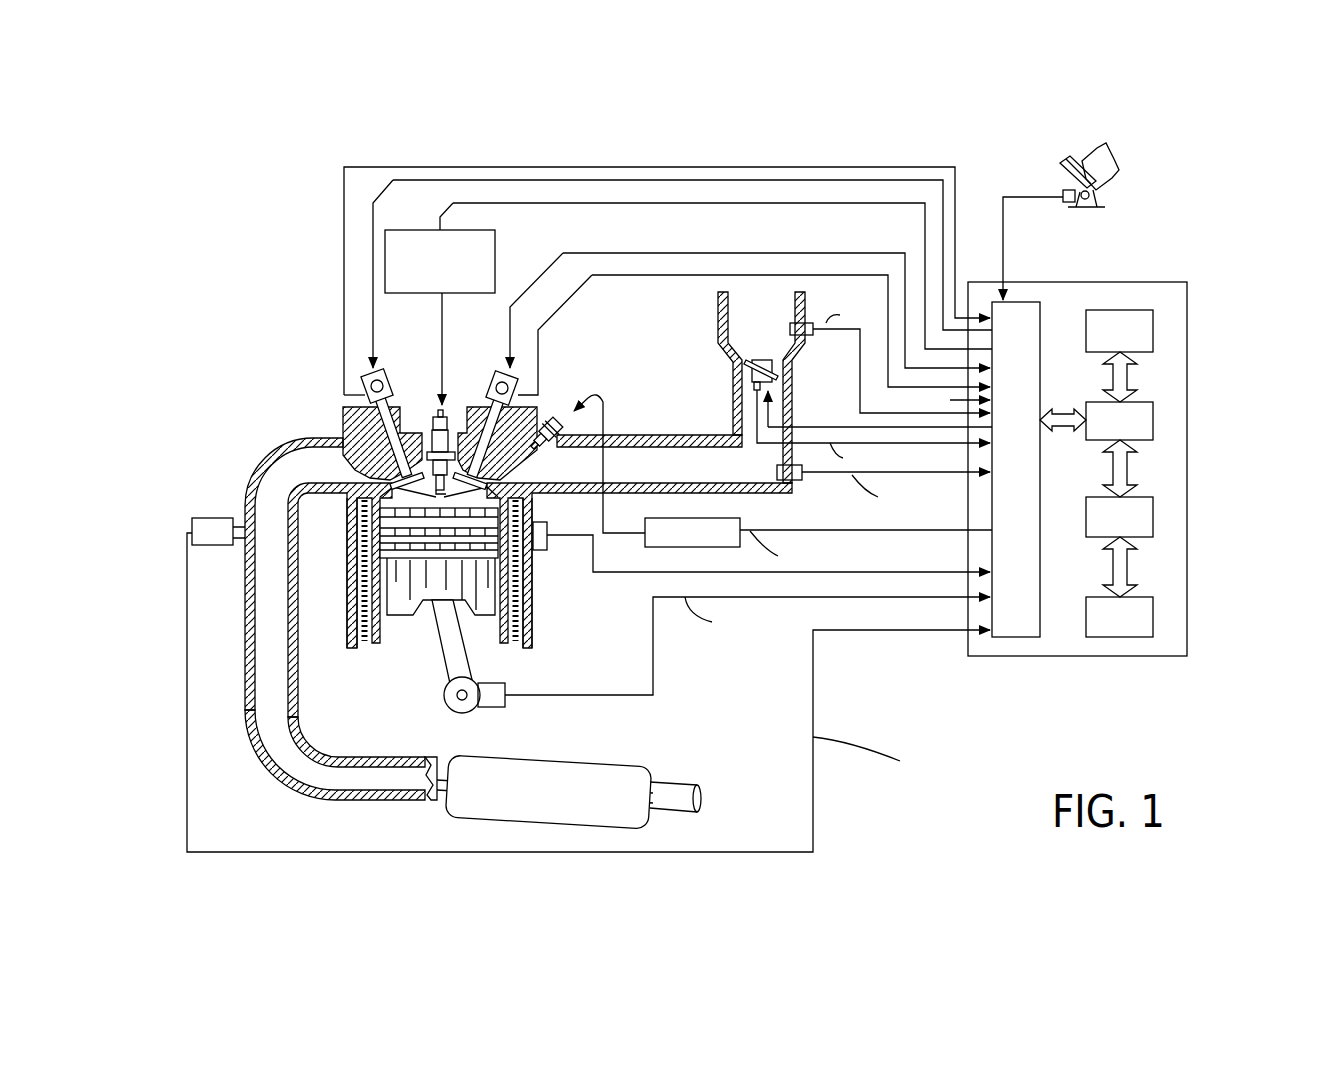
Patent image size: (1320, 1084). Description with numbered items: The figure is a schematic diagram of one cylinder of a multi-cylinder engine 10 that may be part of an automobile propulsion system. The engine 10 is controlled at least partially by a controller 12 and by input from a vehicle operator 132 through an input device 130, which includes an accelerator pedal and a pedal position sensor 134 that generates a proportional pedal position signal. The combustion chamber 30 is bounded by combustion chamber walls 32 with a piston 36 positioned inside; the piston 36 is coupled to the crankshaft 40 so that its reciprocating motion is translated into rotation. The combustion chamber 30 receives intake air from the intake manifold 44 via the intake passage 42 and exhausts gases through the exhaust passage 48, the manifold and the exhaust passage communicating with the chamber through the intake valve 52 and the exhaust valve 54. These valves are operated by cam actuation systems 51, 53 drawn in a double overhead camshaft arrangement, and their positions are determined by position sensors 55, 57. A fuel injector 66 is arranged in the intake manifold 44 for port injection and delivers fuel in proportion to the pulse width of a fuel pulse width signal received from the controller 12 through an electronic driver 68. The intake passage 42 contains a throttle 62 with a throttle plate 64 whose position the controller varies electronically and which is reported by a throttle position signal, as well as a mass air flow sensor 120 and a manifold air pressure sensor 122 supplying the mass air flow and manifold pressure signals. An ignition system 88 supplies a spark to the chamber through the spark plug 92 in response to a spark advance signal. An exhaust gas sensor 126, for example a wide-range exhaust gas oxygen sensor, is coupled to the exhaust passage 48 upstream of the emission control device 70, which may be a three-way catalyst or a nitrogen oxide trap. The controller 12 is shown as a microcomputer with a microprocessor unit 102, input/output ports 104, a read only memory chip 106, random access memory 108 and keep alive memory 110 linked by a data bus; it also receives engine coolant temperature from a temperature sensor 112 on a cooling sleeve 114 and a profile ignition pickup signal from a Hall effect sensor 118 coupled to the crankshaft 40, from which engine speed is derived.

The engine 10 is at (282, 361).
The controller 12 is at (1188, 282).
The combustion chamber 30 is at (438, 502).
The combustion chamber walls 32 is at (388, 640).
The piston 36 is at (442, 590).
The crankshaft 40 is at (452, 713).
The intake passage 42 is at (761, 387).
The intake manifold 44 is at (639, 541).
The exhaust passage 48 is at (341, 619).
The cam actuation system 51 is at (490, 385).
The intake valve 52 is at (477, 477).
The cam actuation system 53 is at (393, 378).
The exhaust valve 54 is at (365, 462).
The position sensor 55 is at (517, 378).
The position sensor 57 is at (362, 384).
The throttle 62 is at (780, 374).
The throttle plate 64 is at (745, 364).
The fuel injector 66 is at (547, 417).
The electronic driver 68 is at (698, 517).
The emission control device 70 is at (607, 758).
The ignition system 88 is at (400, 229).
The spark plug 92 is at (443, 416).
The microprocessor unit 102 is at (1153, 415).
The input/output ports 104 is at (1042, 312).
The read only memory chip 106 is at (1153, 330).
The random access memory 108 is at (1153, 515).
The keep alive memory 110 is at (1153, 615).
The temperature sensor 112 is at (546, 549).
The cooling sleeve 114 is at (535, 618).
The Hall effect sensor 118 is at (493, 708).
The mass air flow sensor 120 is at (813, 336).
The manifold air pressure sensor 122 is at (800, 482).
The exhaust gas sensor 126 is at (192, 522).
The input device 130 is at (1064, 173).
The vehicle operator 132 is at (1073, 160).
The pedal position sensor 134 is at (1062, 204).